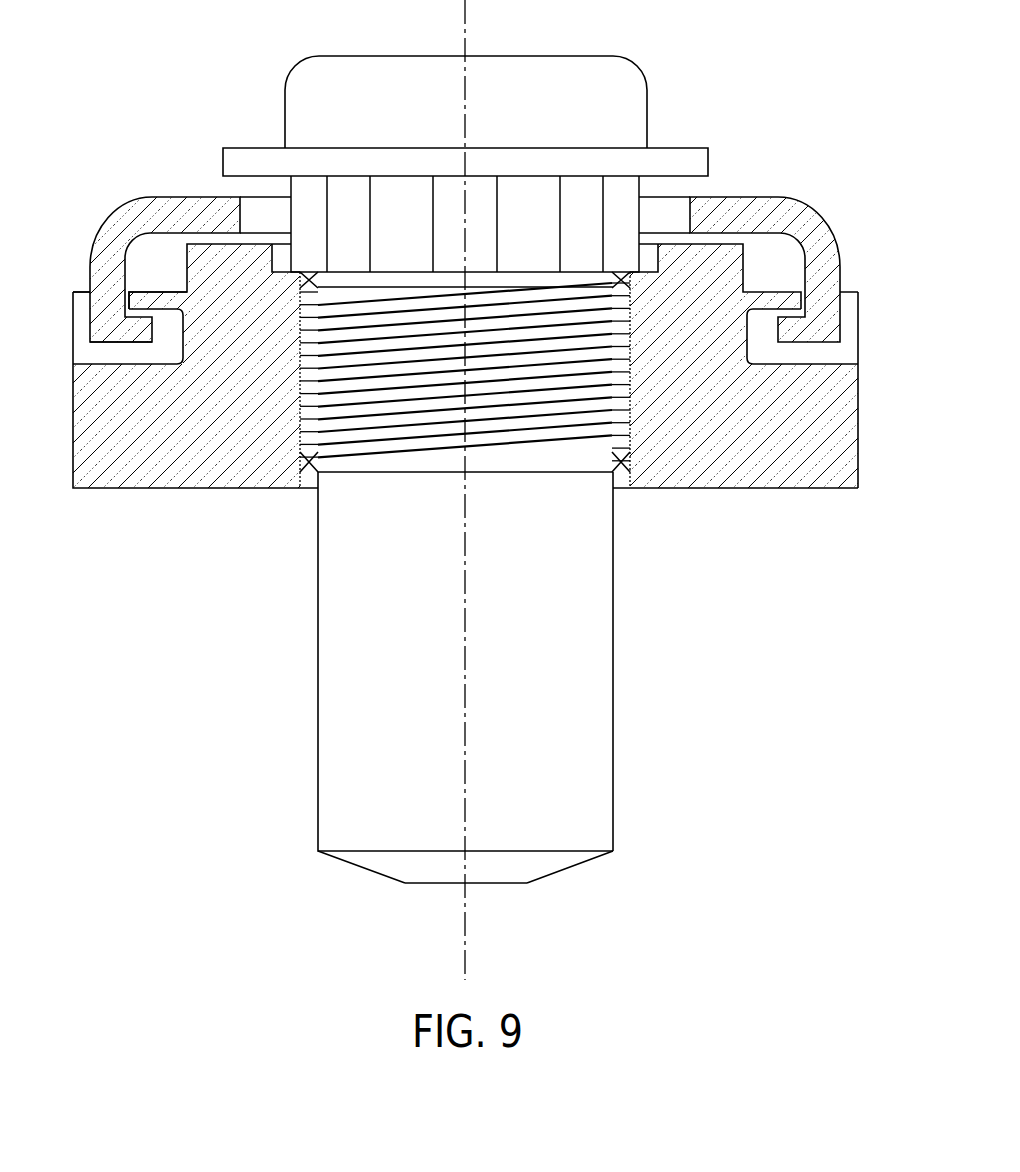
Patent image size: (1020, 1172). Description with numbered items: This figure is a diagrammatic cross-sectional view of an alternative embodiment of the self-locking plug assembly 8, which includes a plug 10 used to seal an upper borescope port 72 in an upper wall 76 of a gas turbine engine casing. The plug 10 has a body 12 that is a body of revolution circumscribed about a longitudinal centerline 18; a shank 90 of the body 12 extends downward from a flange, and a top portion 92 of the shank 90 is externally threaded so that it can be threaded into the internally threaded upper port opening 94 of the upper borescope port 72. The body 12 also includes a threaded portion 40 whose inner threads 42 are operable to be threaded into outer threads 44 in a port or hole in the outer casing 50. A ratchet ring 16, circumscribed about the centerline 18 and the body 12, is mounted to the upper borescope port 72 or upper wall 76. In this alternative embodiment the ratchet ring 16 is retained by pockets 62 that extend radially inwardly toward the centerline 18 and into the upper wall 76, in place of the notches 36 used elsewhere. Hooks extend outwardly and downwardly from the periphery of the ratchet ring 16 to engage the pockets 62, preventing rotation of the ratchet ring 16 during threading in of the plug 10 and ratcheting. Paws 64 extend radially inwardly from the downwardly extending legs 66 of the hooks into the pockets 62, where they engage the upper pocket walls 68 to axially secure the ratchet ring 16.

The self-locking plug assembly 8 is at (322, 916).
The plug 10 is at (614, 589).
The body 12 is at (607, 56).
The ratchet ring 16 is at (767, 197).
The longitudinal centerline 18 is at (468, 680).
The notches 36 is at (860, 323).
The threaded portion 40 is at (580, 484).
The inner threads 42 is at (424, 461).
The outer threads 44 is at (320, 486).
The outer casing 50 is at (793, 489).
The pockets 62 is at (148, 355).
The paws 64 is at (118, 343).
The legs 66 is at (90, 275).
The upper pocket walls 68 is at (168, 316).
The upper borescope port 72 is at (648, 268).
The upper wall 76 is at (861, 425).
The shank 90 is at (614, 762).
The top portion 92 is at (512, 461).
The upper port opening 94 is at (303, 423).